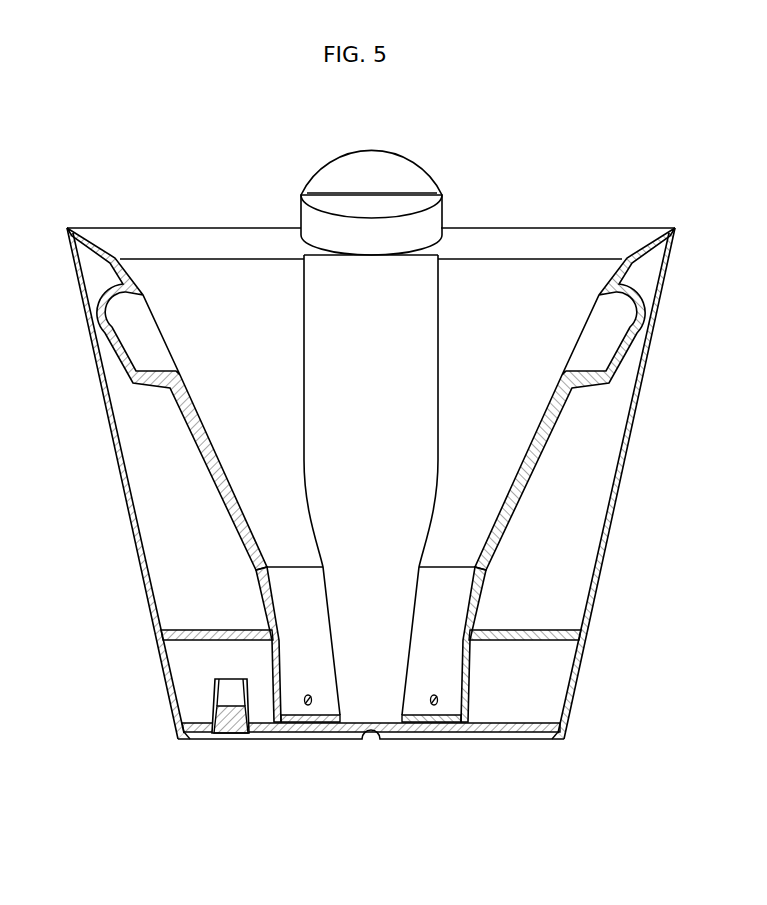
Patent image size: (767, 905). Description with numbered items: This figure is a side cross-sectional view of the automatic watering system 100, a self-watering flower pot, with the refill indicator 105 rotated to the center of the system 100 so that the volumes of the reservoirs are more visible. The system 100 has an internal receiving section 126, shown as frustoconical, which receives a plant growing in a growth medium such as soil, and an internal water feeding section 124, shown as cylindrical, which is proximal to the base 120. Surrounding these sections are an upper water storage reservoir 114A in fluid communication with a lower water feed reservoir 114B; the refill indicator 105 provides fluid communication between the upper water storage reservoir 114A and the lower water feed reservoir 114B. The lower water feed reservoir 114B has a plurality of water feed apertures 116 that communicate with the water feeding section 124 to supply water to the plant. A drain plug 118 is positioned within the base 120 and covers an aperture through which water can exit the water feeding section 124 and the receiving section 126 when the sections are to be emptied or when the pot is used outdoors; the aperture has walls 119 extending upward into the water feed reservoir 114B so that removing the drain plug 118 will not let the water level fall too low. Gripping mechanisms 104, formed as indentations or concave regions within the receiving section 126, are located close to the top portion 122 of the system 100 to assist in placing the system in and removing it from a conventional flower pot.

The automatic watering system 100 is at (620, 115).
The gripping mechanisms 104 is at (145, 323).
The refill indicator 105 is at (392, 150).
The upper water storage reservoir 114A is at (142, 445).
The lower water feed reservoir 114B is at (188, 672).
The water feed apertures 116 is at (308, 705).
The drain plug 118 is at (241, 725).
The walls 119 is at (181, 722).
The base 120 is at (286, 730).
The top portion 122 is at (463, 218).
The water feeding section 124 is at (282, 672).
The receiving section 126 is at (234, 361).